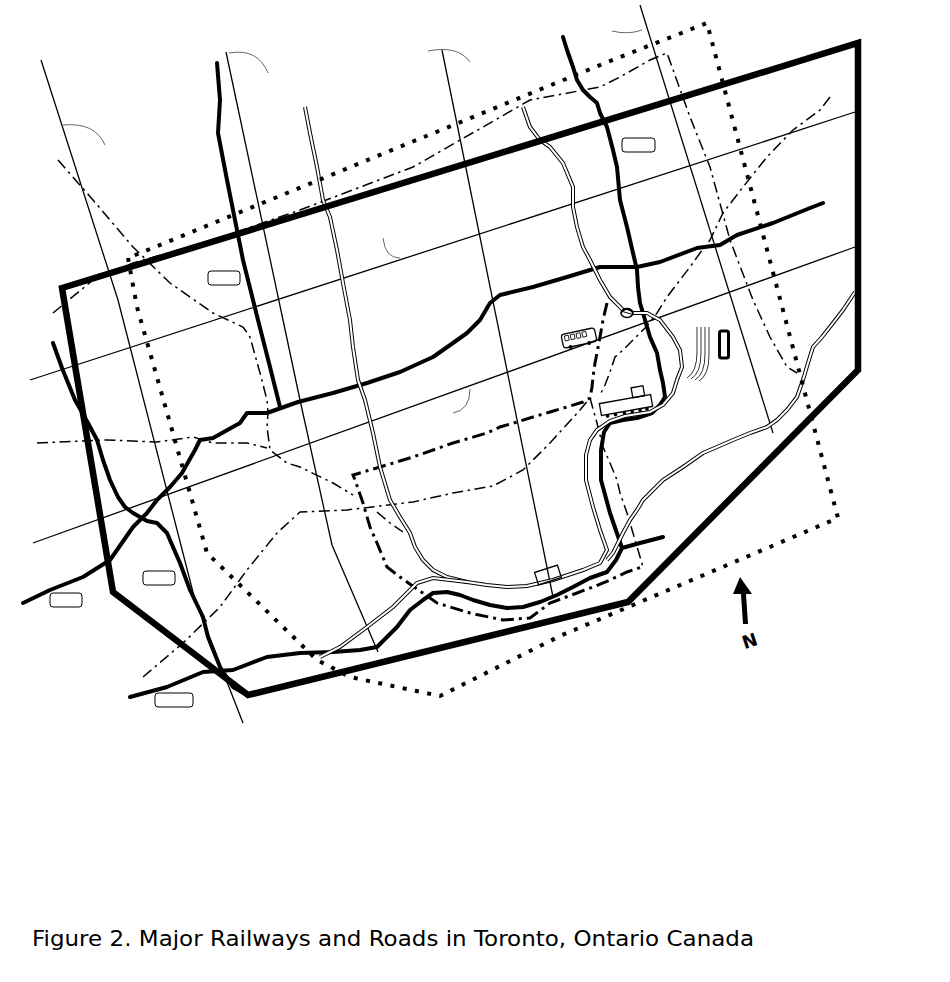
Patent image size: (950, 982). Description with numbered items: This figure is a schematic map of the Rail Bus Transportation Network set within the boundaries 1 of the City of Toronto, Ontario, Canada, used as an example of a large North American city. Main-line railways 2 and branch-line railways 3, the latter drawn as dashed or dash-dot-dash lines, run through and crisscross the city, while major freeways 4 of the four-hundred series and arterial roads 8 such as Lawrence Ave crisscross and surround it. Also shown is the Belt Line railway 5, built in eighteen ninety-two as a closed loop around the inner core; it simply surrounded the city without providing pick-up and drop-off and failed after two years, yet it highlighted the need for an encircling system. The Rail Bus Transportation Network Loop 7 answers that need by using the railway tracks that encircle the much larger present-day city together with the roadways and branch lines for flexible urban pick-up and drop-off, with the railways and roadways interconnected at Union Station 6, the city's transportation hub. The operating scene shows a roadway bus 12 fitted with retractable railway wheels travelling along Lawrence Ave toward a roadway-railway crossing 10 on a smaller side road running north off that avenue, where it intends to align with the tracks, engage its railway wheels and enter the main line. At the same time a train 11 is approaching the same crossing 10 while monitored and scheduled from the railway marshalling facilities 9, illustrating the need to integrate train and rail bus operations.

The boundaries 1 is at (577, 620).
The main-line railways 2 is at (310, 667).
The branch-line railways 3 is at (148, 675).
The freeways 4 is at (481, 312).
The Belt Line railway 5 is at (620, 488).
The Union Station 6 is at (540, 567).
The Rail Bus Transportation Network Loop 7 is at (473, 678).
The arterial roads 8 is at (42, 61).
The railway marshalling facilities 9 is at (737, 343).
The roadway-railway crossing 10 is at (620, 322).
The train 11 is at (603, 404).
The roadway bus 12 is at (560, 348).